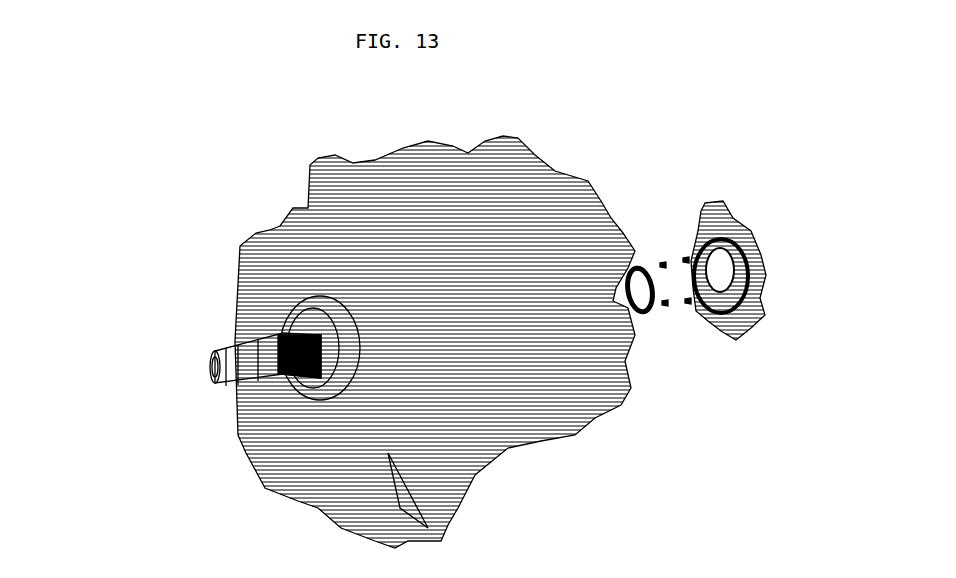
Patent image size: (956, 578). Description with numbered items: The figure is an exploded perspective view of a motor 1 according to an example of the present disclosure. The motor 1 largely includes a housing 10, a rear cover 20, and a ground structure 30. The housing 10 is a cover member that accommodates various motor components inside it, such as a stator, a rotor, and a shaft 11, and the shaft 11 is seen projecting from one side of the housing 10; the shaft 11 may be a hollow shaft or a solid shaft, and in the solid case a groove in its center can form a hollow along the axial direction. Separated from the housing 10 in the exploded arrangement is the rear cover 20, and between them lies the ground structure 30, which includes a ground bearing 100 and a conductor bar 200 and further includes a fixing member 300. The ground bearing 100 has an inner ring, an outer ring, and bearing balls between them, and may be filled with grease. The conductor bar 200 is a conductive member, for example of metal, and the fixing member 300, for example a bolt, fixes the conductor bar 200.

The motor 1 is at (301, 108).
The housing 10 is at (228, 218).
The shaft 11 is at (215, 344).
The rear cover 20 is at (758, 223).
The ground structure 30 is at (652, 425).
The ground bearing 100 is at (643, 330).
The fixing member 300 is at (675, 330).
The conductor bar 200 is at (707, 330).